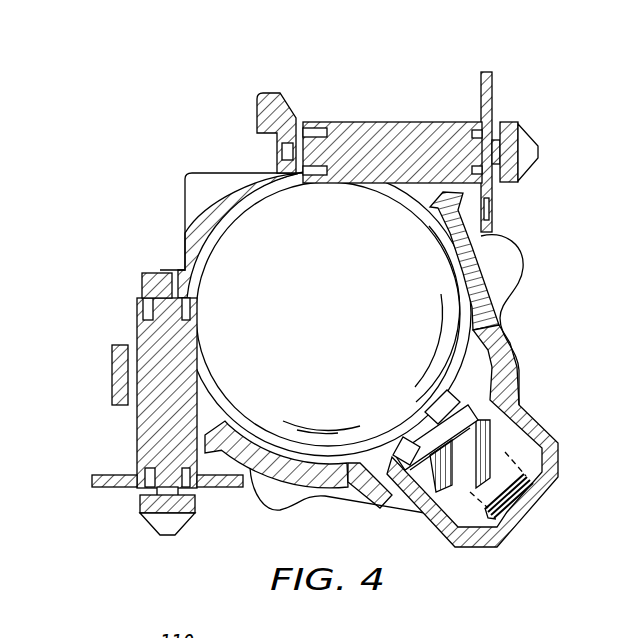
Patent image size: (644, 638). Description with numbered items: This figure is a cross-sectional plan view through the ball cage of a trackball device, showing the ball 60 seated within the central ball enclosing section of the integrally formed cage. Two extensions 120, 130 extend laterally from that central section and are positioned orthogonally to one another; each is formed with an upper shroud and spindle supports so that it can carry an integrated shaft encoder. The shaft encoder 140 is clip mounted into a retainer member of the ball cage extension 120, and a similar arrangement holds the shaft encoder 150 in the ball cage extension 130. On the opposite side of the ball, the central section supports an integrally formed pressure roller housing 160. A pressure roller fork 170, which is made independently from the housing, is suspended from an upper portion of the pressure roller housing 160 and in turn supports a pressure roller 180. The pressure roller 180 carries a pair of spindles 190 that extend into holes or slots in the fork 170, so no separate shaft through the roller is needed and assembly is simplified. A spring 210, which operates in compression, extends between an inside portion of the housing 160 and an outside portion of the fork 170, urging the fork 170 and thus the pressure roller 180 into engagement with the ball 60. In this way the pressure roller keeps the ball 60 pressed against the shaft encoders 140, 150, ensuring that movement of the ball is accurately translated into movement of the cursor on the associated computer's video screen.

The ball 60 is at (334, 263).
The extension 120 is at (256, 97).
The extension 130 is at (143, 274).
The shaft encoder 140 is at (443, 122).
The shaft encoder 150 is at (135, 443).
The pressure roller housing 160 is at (458, 547).
The pressure roller fork 170 is at (498, 434).
The pressure roller 180 is at (520, 381).
The spindles 190 is at (417, 458).
The spring 210 is at (522, 488).